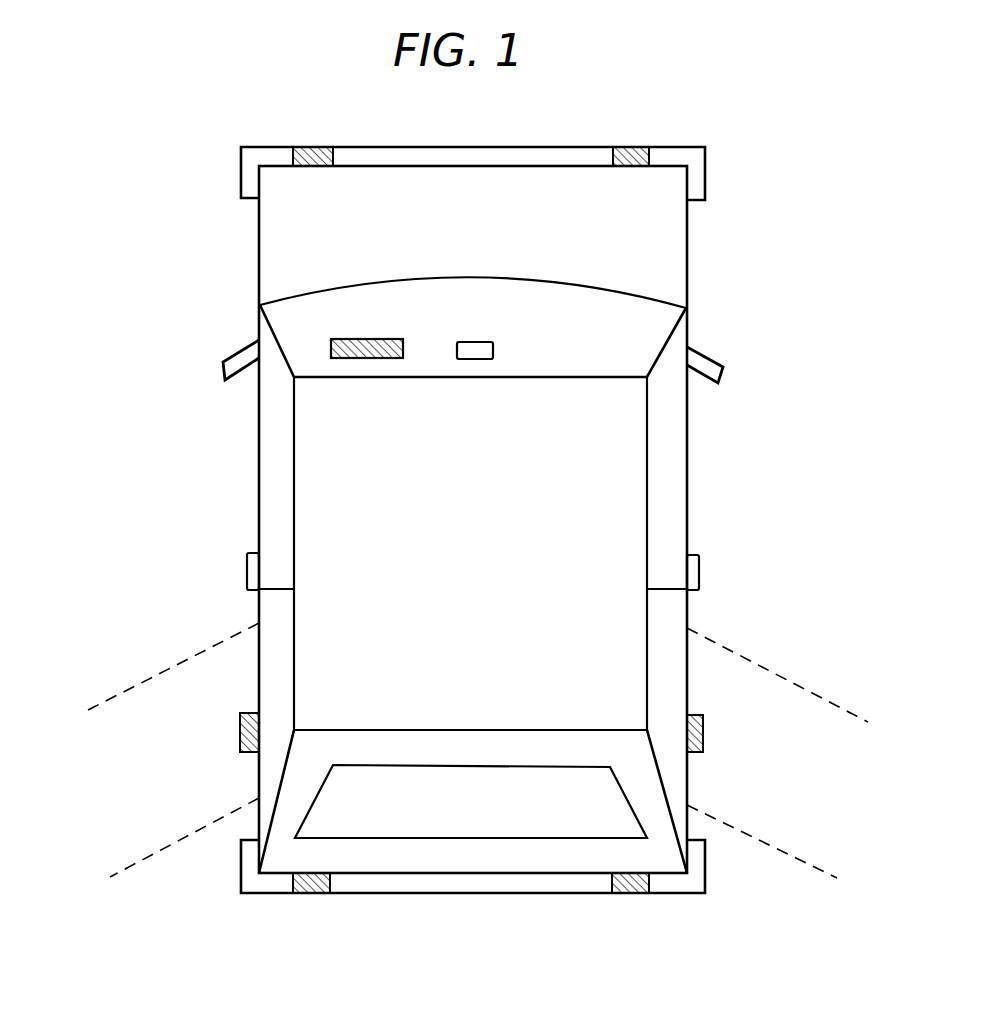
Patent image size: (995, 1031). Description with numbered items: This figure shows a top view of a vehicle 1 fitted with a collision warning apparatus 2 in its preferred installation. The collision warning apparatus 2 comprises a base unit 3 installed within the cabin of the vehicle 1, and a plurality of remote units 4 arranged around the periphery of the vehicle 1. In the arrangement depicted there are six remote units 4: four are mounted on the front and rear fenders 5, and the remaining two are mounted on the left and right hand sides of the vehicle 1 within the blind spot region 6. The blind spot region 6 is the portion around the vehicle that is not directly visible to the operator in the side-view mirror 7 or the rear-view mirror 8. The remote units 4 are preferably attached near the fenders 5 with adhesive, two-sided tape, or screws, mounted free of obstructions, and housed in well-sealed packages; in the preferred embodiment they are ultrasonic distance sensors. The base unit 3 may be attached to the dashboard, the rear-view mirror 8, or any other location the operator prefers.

The vehicle 1 is at (322, 463).
The collision warning apparatus 2 is at (400, 227).
The base unit 3 is at (355, 358).
The remote units 4 is at (313, 146).
The fenders 5 is at (466, 147).
The blind spot region 6 is at (156, 678).
The side-view mirror 7 is at (222, 361).
The rear-view mirror 8 is at (473, 360).